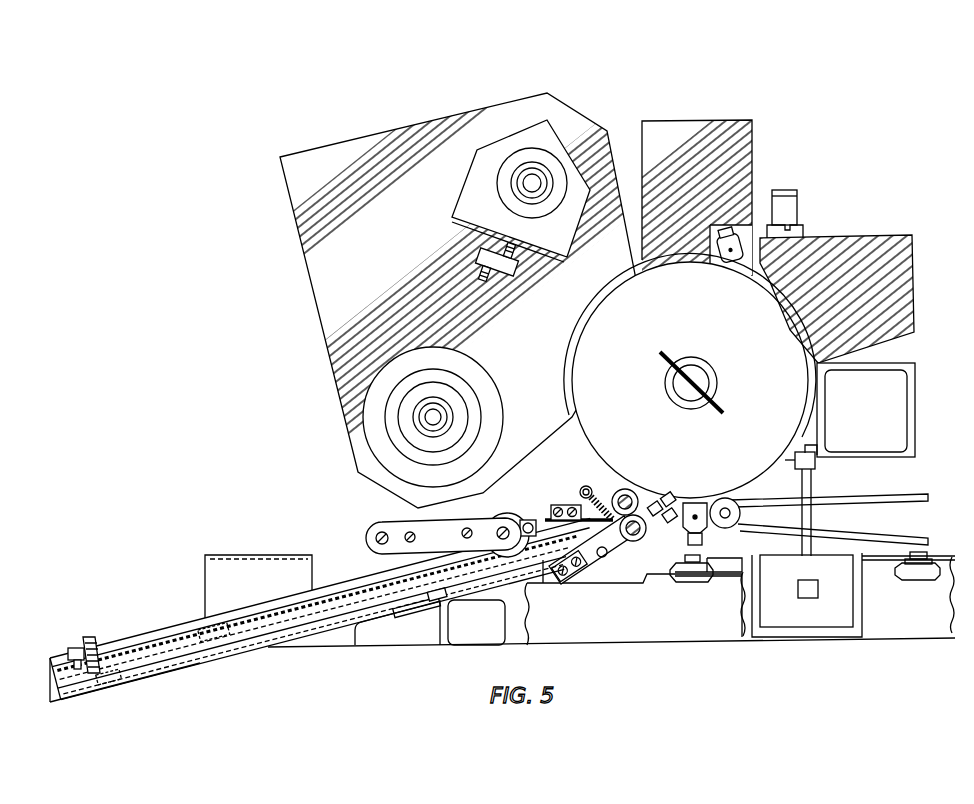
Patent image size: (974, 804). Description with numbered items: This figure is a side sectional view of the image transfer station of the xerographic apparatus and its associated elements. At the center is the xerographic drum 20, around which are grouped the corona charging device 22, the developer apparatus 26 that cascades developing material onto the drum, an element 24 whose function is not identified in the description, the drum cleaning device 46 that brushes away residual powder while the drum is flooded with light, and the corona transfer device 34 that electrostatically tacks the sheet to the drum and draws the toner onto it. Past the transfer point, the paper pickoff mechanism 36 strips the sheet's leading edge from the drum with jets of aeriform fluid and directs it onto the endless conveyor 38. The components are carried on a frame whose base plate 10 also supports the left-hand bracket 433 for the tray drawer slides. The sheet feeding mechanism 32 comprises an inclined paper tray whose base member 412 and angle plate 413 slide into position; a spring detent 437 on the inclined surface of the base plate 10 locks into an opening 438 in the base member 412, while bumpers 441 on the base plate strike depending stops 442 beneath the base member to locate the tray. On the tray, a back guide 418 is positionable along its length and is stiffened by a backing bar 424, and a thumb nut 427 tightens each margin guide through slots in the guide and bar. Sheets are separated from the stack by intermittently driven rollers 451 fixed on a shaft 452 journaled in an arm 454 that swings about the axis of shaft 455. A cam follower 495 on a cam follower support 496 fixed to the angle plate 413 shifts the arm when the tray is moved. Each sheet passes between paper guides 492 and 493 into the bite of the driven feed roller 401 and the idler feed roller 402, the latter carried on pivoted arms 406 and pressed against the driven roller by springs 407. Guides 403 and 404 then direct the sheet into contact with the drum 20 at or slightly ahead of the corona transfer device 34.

The base plate 10 is at (617, 637).
The xerographic drum 20 is at (792, 329).
The corona charging device 22 is at (727, 230).
The block 24 is at (768, 158).
The developer apparatus 26 is at (377, 130).
The sheet feeding mechanism 32 is at (222, 666).
The corona transfer device 34 is at (750, 500).
The paper pickoff mechanism 36 is at (808, 642).
The endless conveyor 38 is at (842, 531).
The drum cleaning device 46 is at (869, 237).
The feed roller 401 is at (633, 470).
The feed roller 402 is at (593, 550).
The guide 403 is at (639, 548).
The guide 404 is at (668, 504).
The arm 406 is at (603, 572).
The spring 407 is at (601, 497).
The base member 412 is at (166, 676).
The angle plate 413 is at (58, 683).
The back guide 418 is at (95, 640).
The backing bar 424 is at (76, 647).
The thumb nut 427 is at (68, 654).
The left-hand bracket 433 is at (255, 555).
The spring detent 437 is at (420, 612).
The opening 438 is at (400, 618).
The bumper 441 is at (458, 605).
The depending stop 442 is at (435, 592).
The roller 451 is at (505, 512).
The shaft 452 is at (529, 520).
The arm 454 is at (405, 519).
The shaft 455 is at (367, 531).
The paper guide 492 is at (546, 578).
The paper guide 493 is at (564, 505).
The cam follower 495 is at (570, 478).
The cam follower support 496 is at (546, 522).